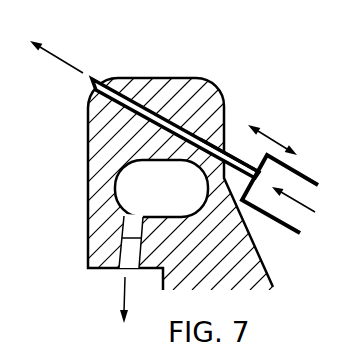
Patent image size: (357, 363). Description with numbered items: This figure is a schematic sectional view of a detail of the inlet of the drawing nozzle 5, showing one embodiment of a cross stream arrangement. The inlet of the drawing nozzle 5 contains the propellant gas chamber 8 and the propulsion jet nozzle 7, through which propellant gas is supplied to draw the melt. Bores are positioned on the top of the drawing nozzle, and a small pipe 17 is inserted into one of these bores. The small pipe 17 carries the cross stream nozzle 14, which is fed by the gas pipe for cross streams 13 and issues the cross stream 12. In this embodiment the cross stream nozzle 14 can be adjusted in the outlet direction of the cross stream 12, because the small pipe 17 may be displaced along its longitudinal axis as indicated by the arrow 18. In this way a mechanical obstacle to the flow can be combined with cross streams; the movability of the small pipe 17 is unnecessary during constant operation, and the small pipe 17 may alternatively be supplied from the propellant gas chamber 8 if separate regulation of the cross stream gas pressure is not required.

The inlet of the drawing nozzle 5 is at (72, 133).
The propulsion jet nozzle 7 is at (117, 270).
The propellant gas chamber 8 is at (130, 176).
The cross stream 12 is at (50, 51).
The gas pipe for cross streams 13 is at (307, 179).
The cross stream nozzle 14 is at (99, 78).
The small pipe 17 is at (230, 155).
The arrow 18 is at (266, 140).